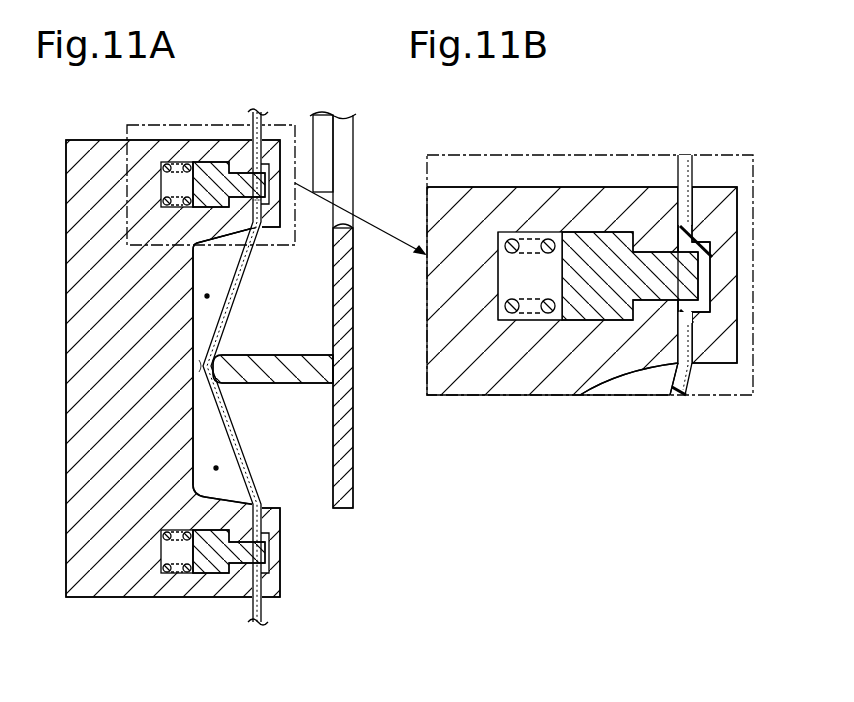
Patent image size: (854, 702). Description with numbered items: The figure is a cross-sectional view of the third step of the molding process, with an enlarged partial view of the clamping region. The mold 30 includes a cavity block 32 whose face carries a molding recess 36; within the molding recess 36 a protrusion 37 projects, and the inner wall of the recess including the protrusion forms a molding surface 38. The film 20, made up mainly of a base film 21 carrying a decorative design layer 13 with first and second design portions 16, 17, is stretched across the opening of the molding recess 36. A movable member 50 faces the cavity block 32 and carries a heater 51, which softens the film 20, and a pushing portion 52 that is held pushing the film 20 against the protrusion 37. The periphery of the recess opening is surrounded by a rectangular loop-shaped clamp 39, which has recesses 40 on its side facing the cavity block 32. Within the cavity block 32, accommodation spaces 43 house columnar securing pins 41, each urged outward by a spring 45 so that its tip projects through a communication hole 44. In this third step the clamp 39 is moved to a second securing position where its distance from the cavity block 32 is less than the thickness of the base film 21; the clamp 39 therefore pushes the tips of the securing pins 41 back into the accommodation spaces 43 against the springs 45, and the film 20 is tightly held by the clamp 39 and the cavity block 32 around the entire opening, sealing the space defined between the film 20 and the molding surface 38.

In FIG. 11A, the decorative design layer 13 is at (396, 396).
In FIG. 11B, the decorative design layer 13 is at (695, 395).
In FIG. 11A, the first design portion 16 is at (238, 394).
In FIG. 11A, the second design portion 17 is at (236, 432).
In FIG. 11A, the film 20 is at (345, 367).
In FIG. 11B, the film 20 is at (681, 324).
In FIG. 11A, the base film 21 is at (233, 476).
In FIG. 11B, the base film 21 is at (666, 395).
In FIG. 11A, the mold 30 is at (37, 368).
In FIG. 11A, the cavity block 32 is at (70, 287).
In FIG. 11B, the cavity block 32 is at (478, 188).
In FIG. 11A, the molding recess 36 is at (195, 430).
In FIG. 11A, the protrusion 37 is at (199, 372).
In FIG. 11A, the molding surface 38 is at (206, 290).
In FIG. 11B, the clamp 39 is at (737, 232).
In FIG. 11B, the recess 40 is at (700, 300).
In FIG. 11B, the securing pin 41 is at (598, 258).
In FIG. 11B, the accommodation space 43 is at (500, 270).
In FIG. 11B, the communication hole 44 is at (665, 258).
In FIG. 11B, the spring 45 is at (528, 322).
In FIG. 11B, the movable member 50 is at (392, 169).
In FIG. 11A, the heater 51 is at (290, 144).
In FIG. 11A, the pushing portion 52 is at (300, 348).